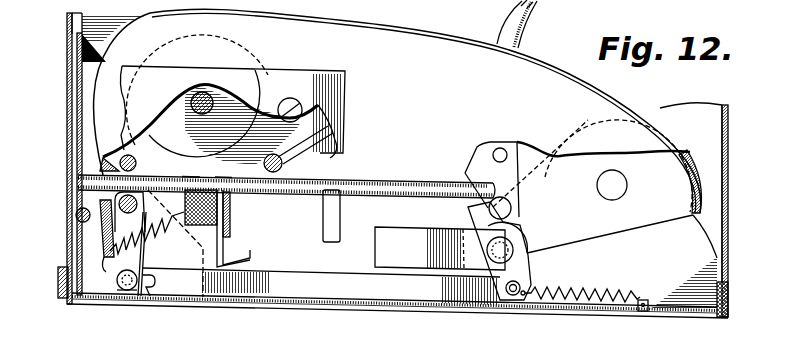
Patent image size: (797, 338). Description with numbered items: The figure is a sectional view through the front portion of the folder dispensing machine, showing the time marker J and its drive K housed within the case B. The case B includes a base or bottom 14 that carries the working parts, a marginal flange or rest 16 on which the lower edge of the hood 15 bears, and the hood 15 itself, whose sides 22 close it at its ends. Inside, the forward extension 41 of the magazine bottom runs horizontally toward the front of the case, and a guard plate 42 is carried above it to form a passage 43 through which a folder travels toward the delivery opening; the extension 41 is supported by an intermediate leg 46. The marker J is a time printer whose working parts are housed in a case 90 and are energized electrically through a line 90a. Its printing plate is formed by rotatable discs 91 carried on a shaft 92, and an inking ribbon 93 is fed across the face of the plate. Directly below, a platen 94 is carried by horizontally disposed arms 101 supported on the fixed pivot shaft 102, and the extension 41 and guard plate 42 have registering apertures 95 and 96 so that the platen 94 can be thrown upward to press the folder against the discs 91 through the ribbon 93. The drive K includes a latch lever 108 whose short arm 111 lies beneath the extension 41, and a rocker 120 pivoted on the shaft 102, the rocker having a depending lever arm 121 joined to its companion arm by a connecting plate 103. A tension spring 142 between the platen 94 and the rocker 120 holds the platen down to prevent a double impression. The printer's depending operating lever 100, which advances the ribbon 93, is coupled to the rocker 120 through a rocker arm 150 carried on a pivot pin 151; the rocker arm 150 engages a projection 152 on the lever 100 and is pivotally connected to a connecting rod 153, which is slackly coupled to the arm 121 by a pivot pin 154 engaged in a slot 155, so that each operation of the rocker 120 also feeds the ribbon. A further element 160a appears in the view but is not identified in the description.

The case B is at (58, 95).
The sides 22 is at (67, 122).
The base 14 is at (579, 322).
The marginal flange 16 is at (58, 287).
The case 90 is at (405, 158).
The line 90a is at (521, 29).
The marker J is at (447, 27).
The rotatable discs 91 is at (293, 98).
The shaft 92 is at (180, 95).
The inking ribbon 93 is at (334, 158).
The forward extension 41 is at (373, 198).
The guard plate 42 is at (405, 178).
The passage 43 is at (443, 180).
The aperture 95 is at (190, 176).
The aperture 96 is at (222, 176).
The latch lever 108 is at (238, 214).
The short arm 111 is at (232, 197).
The drive K is at (237, 228).
The platen 94 is at (236, 238).
The intermediate leg 46 is at (411, 248).
The connecting rod 153 is at (330, 284).
The operating lever 100 is at (515, 191).
The projection 152 is at (512, 208).
The pivot pin 151 is at (513, 246).
The rocker arm 150 is at (523, 266).
The pivot shaft 102 is at (119, 198).
The connecting plate 103 is at (100, 228).
The rocker 120 is at (94, 248).
The arms 101 is at (160, 220).
The lever arm 121 is at (141, 258).
The tension spring 142 is at (111, 281).
The pivot pin 154 is at (139, 292).
The slot 155 is at (152, 296).
The hood 15 is at (740, 230).
The element 160a is at (425, 332).